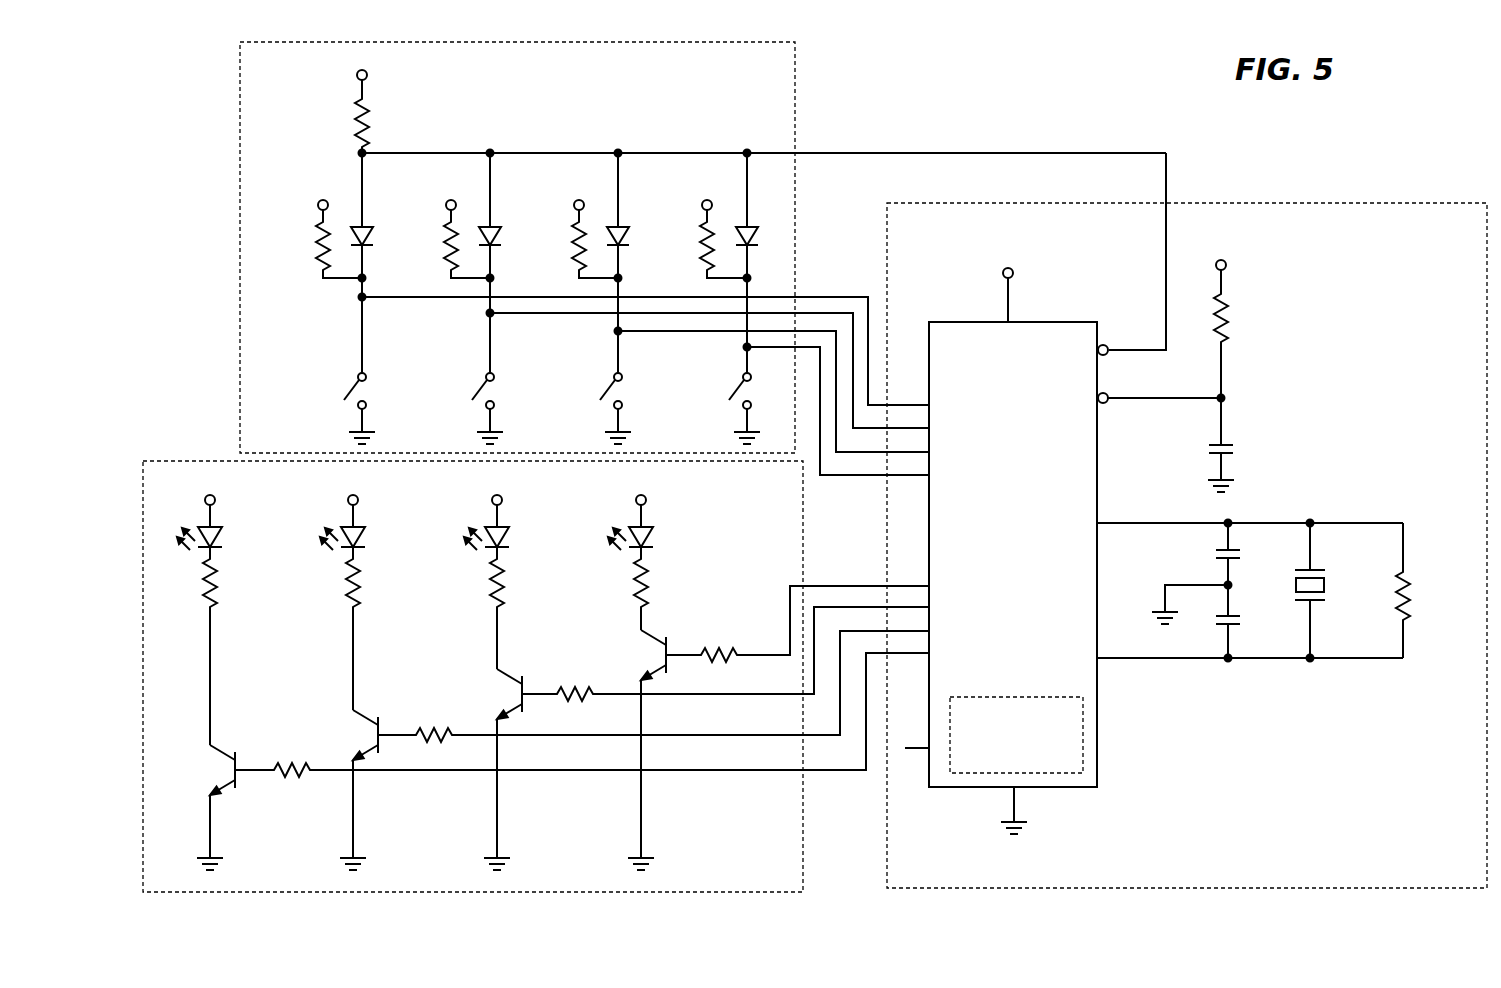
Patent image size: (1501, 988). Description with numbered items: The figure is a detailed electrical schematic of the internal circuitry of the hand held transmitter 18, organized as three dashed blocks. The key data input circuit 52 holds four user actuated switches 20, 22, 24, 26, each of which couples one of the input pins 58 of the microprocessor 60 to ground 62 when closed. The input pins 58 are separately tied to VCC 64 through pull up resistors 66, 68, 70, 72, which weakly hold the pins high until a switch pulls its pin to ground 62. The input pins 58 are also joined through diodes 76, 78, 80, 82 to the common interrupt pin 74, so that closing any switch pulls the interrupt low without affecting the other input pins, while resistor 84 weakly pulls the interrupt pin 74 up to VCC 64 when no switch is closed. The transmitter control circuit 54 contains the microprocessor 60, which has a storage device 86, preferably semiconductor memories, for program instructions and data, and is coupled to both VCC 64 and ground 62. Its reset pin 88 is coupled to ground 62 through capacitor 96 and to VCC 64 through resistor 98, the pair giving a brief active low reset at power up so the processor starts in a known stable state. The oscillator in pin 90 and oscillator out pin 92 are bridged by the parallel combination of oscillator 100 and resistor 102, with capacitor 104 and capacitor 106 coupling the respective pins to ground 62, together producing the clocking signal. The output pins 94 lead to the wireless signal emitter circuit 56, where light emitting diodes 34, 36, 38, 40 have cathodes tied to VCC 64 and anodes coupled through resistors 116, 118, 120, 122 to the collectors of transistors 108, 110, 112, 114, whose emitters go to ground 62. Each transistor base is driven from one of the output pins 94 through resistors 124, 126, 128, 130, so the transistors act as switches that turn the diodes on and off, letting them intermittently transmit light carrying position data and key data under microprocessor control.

The transmitter 18 is at (1040, 85).
The switch 20 is at (350, 392).
The switch 22 is at (478, 392).
The switch 24 is at (606, 392).
The switch 26 is at (735, 392).
The light emitting diode 34 is at (218, 528).
The light emitting diode 36 is at (361, 528).
The light emitting diode 38 is at (505, 528).
The light emitting diode 40 is at (649, 528).
The key data input circuit 52 is at (797, 62).
The transmitter control circuit 54 is at (1452, 188).
The wireless signal emitter circuit 56 is at (805, 862).
The input pins 58 is at (878, 400).
The microprocessor 60 is at (1060, 320).
The ground 62 is at (1018, 808).
The VCC 64 is at (1004, 300).
The pull up resistor 66 is at (318, 233).
The pull up resistor 68 is at (446, 233).
The pull up resistor 70 is at (574, 233).
The pull up resistor 72 is at (702, 233).
The interrupt pin 74 is at (1165, 173).
The diode 76 is at (366, 228).
The diode 78 is at (494, 228).
The diode 80 is at (622, 228).
The diode 82 is at (751, 228).
The resistor 84 is at (365, 112).
The storage device 86 is at (1085, 735).
The reset pin 88 is at (1130, 407).
The oscillator in pin 90 is at (1130, 522).
The oscillator out pin 92 is at (1135, 665).
The output pins 94 is at (878, 662).
The capacitor 96 is at (1233, 447).
The resistor 98 is at (1230, 310).
The oscillator 100 is at (1330, 585).
The resistor 102 is at (1410, 572).
The capacitor 104 is at (1237, 558).
The capacitor 106 is at (1222, 628).
The transistor 108 is at (220, 750).
The transistor 110 is at (365, 714).
The transistor 112 is at (508, 675).
The transistor 114 is at (652, 651).
The resistor 116 is at (218, 592).
The resistor 118 is at (361, 592).
The resistor 120 is at (505, 592).
The resistor 122 is at (650, 585).
The resistor 124 is at (290, 778).
The resistor 126 is at (440, 739).
The resistor 128 is at (583, 700).
The resistor 130 is at (735, 658).